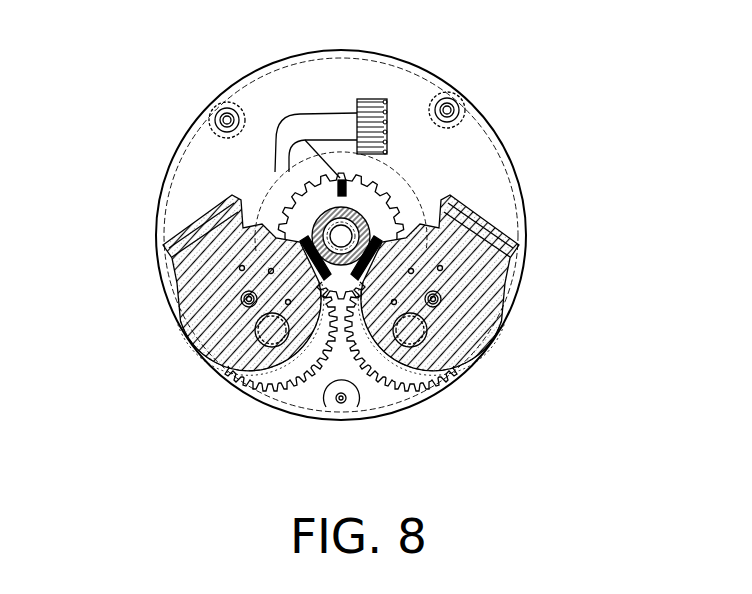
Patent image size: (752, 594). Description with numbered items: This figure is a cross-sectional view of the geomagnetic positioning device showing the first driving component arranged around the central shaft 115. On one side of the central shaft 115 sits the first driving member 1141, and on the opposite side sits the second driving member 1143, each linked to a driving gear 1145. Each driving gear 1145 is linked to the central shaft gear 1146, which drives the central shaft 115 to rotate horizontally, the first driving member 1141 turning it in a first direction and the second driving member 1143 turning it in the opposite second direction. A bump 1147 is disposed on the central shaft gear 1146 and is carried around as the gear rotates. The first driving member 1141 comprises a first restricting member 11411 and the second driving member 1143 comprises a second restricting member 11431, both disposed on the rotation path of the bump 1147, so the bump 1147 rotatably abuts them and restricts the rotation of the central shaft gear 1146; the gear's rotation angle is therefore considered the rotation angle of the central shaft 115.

The central shaft 115 is at (332, 233).
The first driving member 1141 is at (210, 333).
The first restricting member 11411 is at (380, 253).
The second driving member 1143 is at (477, 330).
The second restricting member 11431 is at (313, 248).
The driving gear 1145 is at (285, 373).
The central shaft gear 1146 is at (375, 203).
The bump 1147 is at (347, 184).